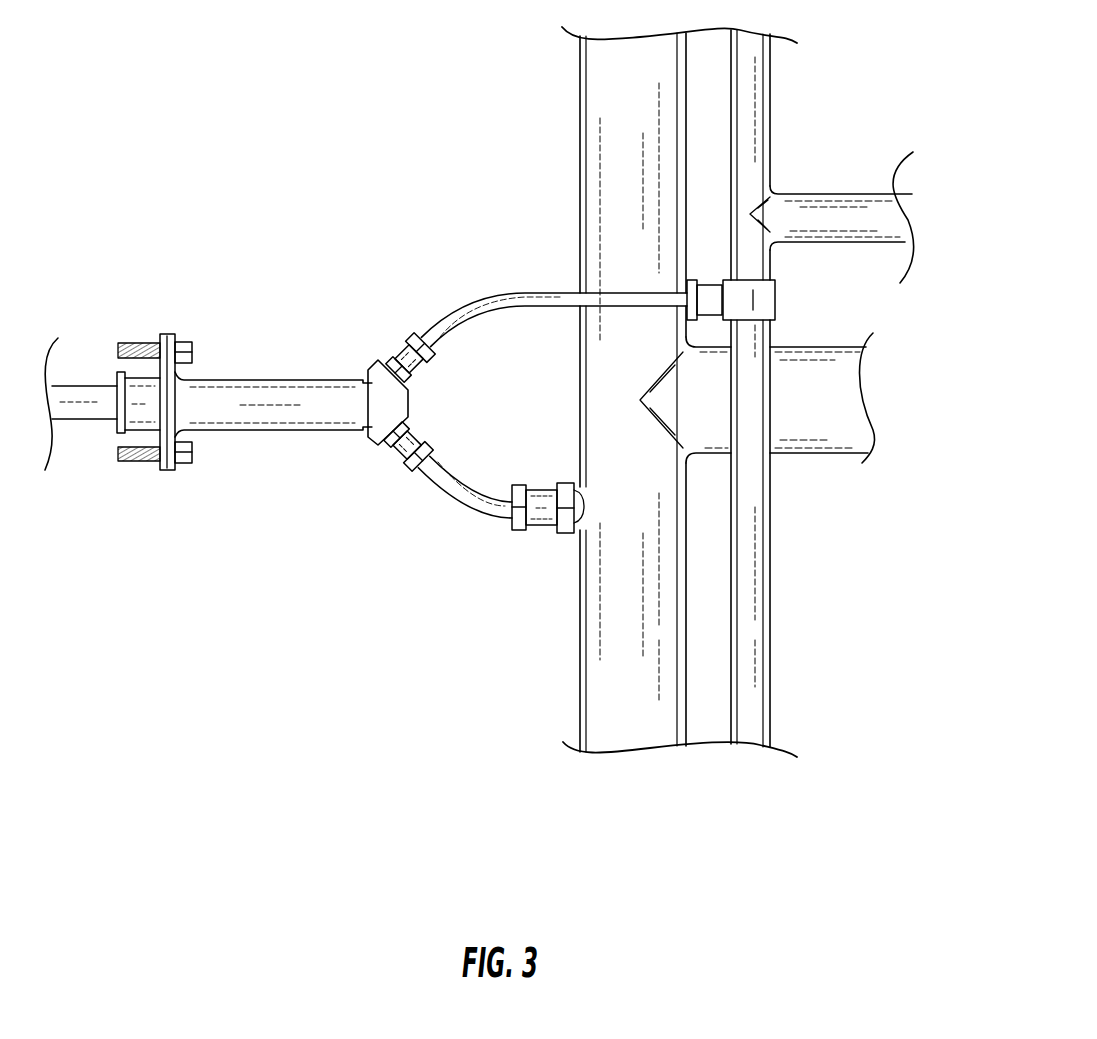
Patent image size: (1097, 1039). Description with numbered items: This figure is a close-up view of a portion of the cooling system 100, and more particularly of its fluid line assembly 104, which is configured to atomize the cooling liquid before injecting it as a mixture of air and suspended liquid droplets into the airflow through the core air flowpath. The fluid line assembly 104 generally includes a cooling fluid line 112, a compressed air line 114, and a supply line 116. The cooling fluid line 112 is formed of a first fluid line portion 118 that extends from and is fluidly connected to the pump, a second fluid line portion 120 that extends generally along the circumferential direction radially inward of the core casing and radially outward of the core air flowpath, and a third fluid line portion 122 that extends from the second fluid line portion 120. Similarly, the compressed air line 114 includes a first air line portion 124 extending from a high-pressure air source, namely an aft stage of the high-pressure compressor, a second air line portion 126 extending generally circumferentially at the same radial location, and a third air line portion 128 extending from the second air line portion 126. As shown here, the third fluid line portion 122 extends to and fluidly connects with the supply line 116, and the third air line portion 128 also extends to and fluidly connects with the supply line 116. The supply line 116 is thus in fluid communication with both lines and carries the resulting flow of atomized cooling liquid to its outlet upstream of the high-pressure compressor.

The cooling system 100 is at (372, 147).
The fluid line assembly 104 is at (375, 200).
The cooling fluid line 112 is at (846, 146).
The compressed air line 114 is at (721, 516).
The supply line 116 is at (238, 378).
The first fluid line portion 118 is at (870, 195).
The second fluid line portion 120 is at (765, 100).
The third fluid line portion 122 is at (500, 292).
The first air line portion 124 is at (818, 347).
The second air line portion 126 is at (592, 637).
The third air line portion 128 is at (455, 502).